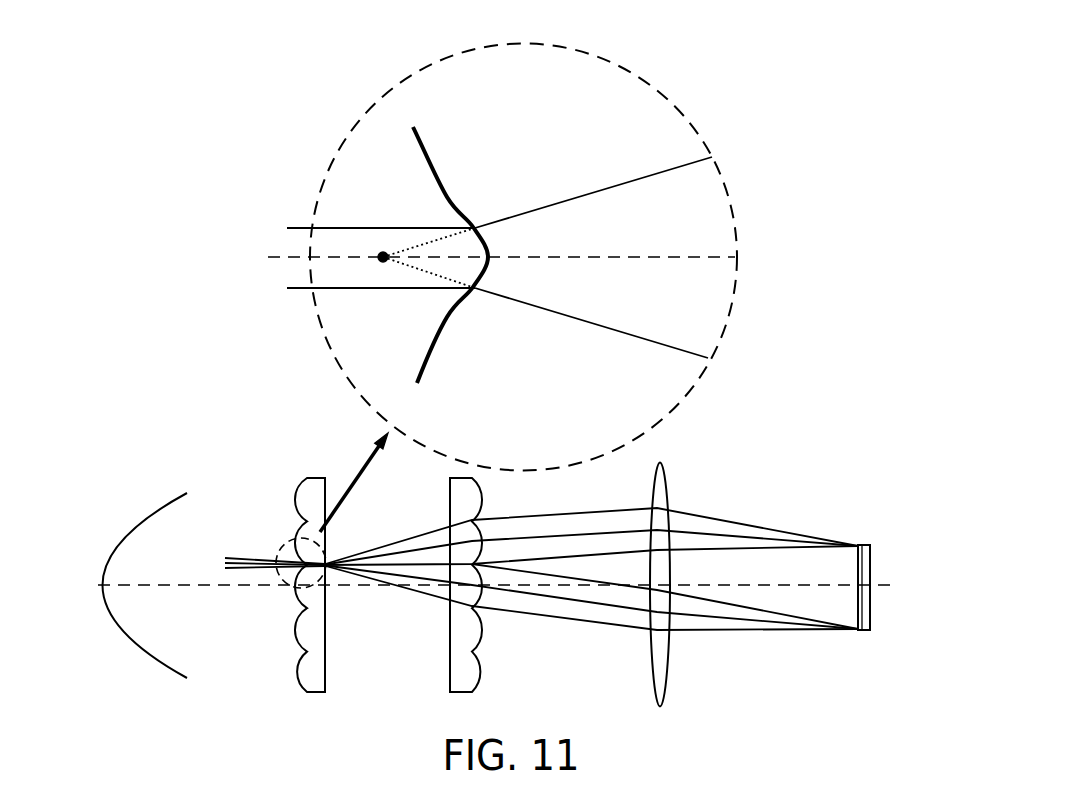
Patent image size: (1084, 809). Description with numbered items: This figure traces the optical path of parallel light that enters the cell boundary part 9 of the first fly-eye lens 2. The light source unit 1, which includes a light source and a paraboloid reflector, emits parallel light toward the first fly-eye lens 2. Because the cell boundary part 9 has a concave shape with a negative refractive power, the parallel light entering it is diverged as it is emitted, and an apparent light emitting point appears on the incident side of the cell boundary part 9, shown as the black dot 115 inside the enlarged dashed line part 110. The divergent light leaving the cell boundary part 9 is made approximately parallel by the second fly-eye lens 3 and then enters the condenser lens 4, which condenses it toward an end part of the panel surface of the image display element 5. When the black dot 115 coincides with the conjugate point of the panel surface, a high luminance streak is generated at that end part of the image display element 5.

The light source unit 1 is at (148, 660).
The first fly-eye lens 2 is at (305, 684).
The second fly-eye lens 3 is at (452, 683).
The condenser lens 4 is at (652, 690).
The image display element 5 is at (860, 631).
The cell boundary part 9 is at (475, 249).
The dashed line part 110 is at (700, 138).
The black dot 115 is at (383, 251).